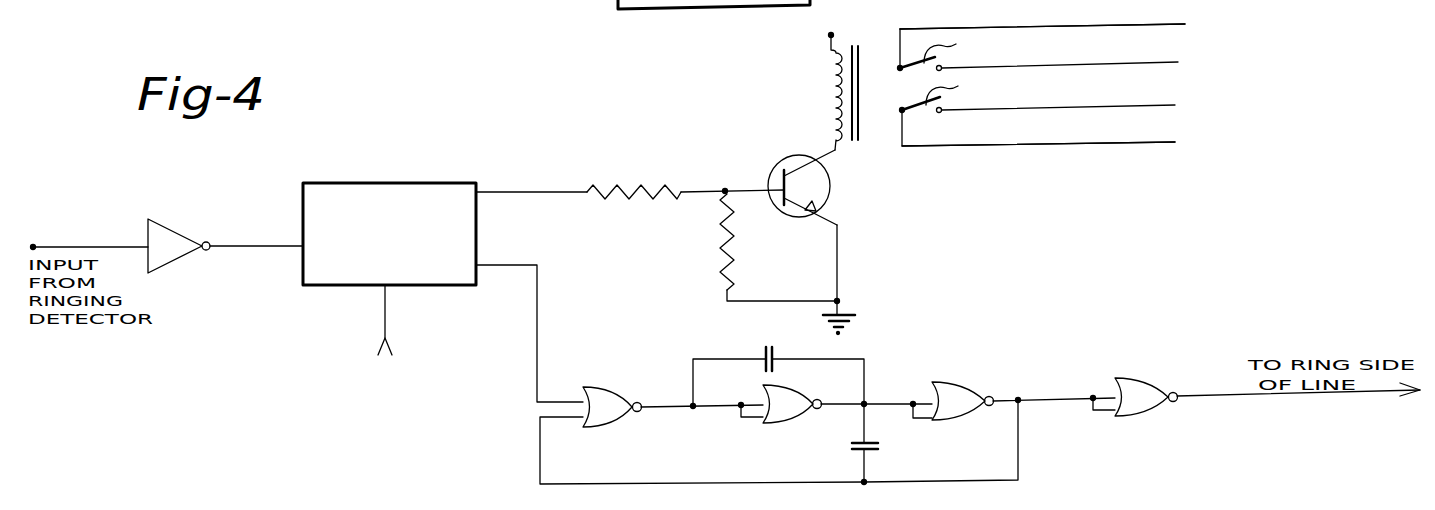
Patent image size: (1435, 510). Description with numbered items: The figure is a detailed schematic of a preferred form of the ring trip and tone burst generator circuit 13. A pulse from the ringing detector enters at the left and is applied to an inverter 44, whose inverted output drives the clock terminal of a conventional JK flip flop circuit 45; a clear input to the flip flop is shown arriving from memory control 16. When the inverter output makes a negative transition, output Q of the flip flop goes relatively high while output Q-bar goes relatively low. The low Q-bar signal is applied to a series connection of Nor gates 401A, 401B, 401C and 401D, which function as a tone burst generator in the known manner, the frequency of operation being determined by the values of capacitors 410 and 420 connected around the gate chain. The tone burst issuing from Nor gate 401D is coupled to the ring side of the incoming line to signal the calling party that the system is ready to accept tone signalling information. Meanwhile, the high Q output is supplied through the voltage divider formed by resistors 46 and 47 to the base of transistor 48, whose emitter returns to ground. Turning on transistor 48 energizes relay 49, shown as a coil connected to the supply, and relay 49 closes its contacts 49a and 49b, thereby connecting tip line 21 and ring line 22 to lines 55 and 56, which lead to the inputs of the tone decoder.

The ring trip and tone burst generator circuit 13 is at (333, 152).
The memory control 16 is at (390, 343).
The tip line 21 is at (1082, 24).
The ring line 22 is at (1094, 141).
The inverter 44 is at (179, 252).
The JK flip flop circuit 45 is at (406, 242).
The resistor of voltage divider 46 is at (634, 179).
The resistor of voltage divider 47 is at (707, 242).
The transistor 48 is at (823, 187).
The relay 49 is at (829, 89).
The relay contact 49a is at (1042, 47).
The relay contact 49b is at (1038, 113).
The line to tone decoder 55 is at (1176, 57).
The line to tone decoder 56 is at (1182, 102).
The Nor gate 401A is at (608, 424).
The Nor gate 401B is at (805, 398).
The Nor gate 401C is at (963, 391).
The Nor gate 401D is at (1145, 386).
The capacitor 410 is at (778, 365).
The capacitor 420 is at (885, 444).